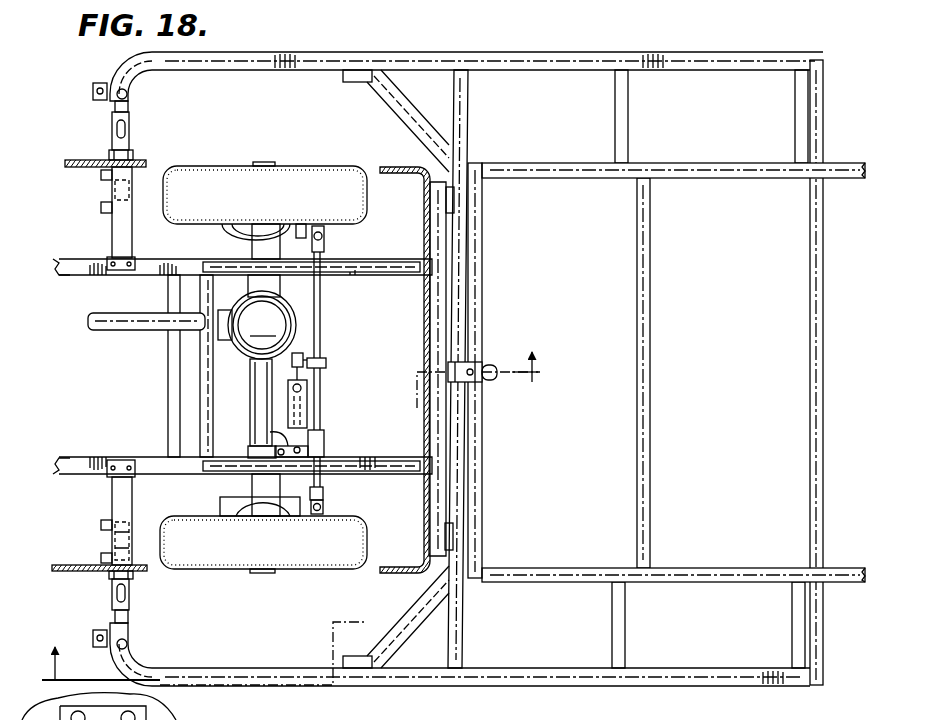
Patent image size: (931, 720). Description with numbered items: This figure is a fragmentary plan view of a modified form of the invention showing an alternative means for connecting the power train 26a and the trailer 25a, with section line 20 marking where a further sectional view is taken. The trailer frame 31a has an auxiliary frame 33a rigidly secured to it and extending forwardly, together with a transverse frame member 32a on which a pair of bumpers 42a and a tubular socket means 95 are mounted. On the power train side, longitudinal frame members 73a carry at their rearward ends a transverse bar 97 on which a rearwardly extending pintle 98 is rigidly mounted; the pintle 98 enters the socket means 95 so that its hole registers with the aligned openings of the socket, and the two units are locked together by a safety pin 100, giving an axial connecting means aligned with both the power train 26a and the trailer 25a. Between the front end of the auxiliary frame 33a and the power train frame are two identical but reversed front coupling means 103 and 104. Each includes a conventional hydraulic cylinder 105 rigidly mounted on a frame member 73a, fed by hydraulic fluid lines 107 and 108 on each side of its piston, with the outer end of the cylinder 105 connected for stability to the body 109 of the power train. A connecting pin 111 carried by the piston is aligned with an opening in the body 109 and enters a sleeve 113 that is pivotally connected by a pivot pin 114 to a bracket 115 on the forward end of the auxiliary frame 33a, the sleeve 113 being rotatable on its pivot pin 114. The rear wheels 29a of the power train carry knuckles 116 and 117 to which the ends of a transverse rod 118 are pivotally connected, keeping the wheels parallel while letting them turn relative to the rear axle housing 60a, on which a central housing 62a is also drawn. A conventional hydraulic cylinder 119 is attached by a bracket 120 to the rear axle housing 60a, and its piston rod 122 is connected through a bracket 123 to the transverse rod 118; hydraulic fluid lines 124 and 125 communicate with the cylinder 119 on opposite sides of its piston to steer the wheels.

The section line 20- 20 is at (304, 511).
The trailer 25a is at (730, 689).
The power train 26a is at (72, 256).
The rear wheels 29a is at (328, 168).
The trailer frame 31a is at (735, 51).
The transverse frame member 32a is at (474, 328).
The auxiliary frame 33a is at (336, 51).
The bumpers 42a is at (455, 212).
The rear axle housing 60a is at (256, 395).
The steering gear box 62a is at (257, 325).
The frame members 73a is at (355, 259).
The tubular socket means 95 is at (487, 359).
The transverse bar 97 is at (438, 312).
The pintle 98 is at (478, 371).
The safety pin 100 is at (483, 393).
The front coupling means 103 is at (147, 140).
The front coupling means 104 is at (103, 546).
The hydraulic cylinder 105 is at (114, 236).
The hydraulic fluid line 107 is at (101, 207).
The hydraulic fluid line 108 is at (101, 175).
The body 109 is at (79, 159).
The connecting pin 111 is at (134, 156).
The sleeve 113 is at (130, 120).
The pivot pin 114 is at (118, 98).
The bracket 115 is at (143, 74).
The knuckle 116 is at (252, 232).
The knuckle 117 is at (248, 495).
The transverse rod 118 is at (321, 322).
The hydraulic cylinder 119 is at (308, 398).
The bracket 120 is at (272, 432).
The piston rod 122 is at (301, 418).
The bracket 123 is at (326, 362).
The hydraulic fluid line 124 is at (301, 388).
The hydraulic fluid line 125 is at (320, 445).